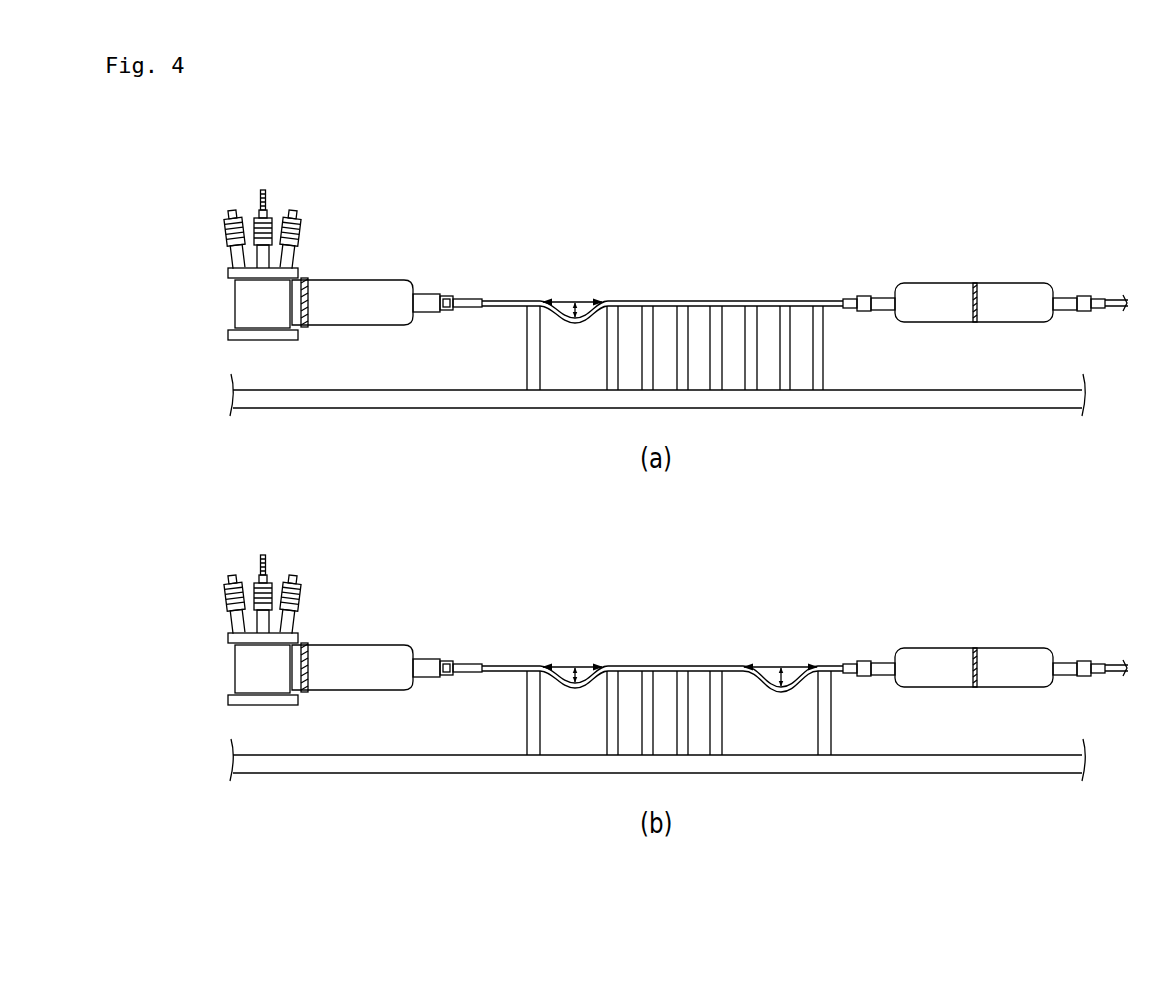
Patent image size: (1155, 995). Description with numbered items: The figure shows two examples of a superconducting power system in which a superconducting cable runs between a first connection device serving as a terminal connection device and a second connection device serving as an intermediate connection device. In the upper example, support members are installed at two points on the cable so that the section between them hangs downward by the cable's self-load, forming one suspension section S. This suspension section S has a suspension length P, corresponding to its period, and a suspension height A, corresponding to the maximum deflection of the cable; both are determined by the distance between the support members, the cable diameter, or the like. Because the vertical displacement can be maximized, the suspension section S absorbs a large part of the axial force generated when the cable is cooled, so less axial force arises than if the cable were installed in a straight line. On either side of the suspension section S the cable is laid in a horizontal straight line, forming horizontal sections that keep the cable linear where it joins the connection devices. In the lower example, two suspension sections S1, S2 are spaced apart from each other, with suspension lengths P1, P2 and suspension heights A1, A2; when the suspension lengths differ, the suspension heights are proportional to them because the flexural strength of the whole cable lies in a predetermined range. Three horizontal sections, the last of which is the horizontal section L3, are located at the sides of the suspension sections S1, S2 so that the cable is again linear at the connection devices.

The horizontal section L3 is at (841, 666).
The suspension length P is at (572, 287).
The suspension length P1 is at (572, 652).
The suspension length P2 is at (780, 654).
The suspension height A is at (579, 316).
The suspension height A1 is at (579, 682).
The suspension height A2 is at (787, 692).
The suspension section S is at (577, 324).
The suspension section S1 is at (576, 690).
The suspension section S2 is at (783, 694).